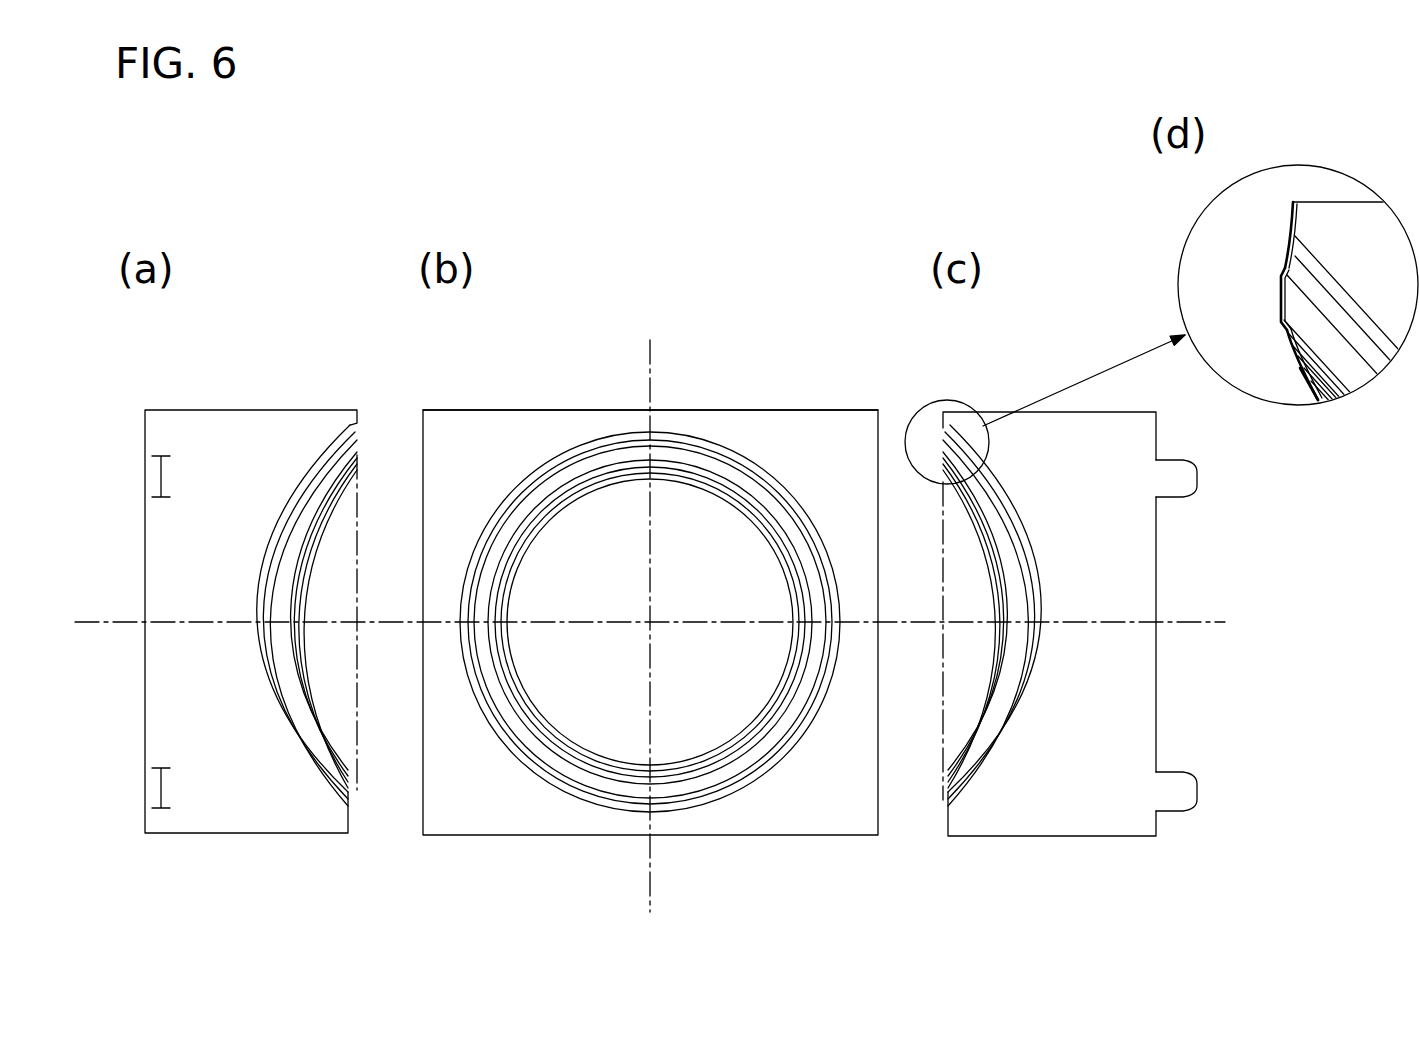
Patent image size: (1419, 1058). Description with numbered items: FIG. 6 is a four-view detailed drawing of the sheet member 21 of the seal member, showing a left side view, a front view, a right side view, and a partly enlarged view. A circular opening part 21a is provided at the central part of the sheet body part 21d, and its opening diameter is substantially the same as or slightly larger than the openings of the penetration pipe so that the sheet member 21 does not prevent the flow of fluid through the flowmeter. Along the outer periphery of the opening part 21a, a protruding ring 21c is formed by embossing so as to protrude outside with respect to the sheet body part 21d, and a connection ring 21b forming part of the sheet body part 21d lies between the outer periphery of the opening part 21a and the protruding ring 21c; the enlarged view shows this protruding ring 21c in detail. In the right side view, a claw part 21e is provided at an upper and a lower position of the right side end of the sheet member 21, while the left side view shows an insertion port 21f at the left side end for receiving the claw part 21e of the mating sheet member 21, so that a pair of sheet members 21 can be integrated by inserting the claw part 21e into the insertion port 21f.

The sheet member 21 is at (767, 412).
The opening part 21a is at (612, 757).
The connection ring 21b is at (1293, 347).
The protruding ring 21c is at (1283, 280).
The sheet body part 21d is at (502, 447).
The claw part 21e is at (1177, 497).
The insertion port 21f is at (161, 482).